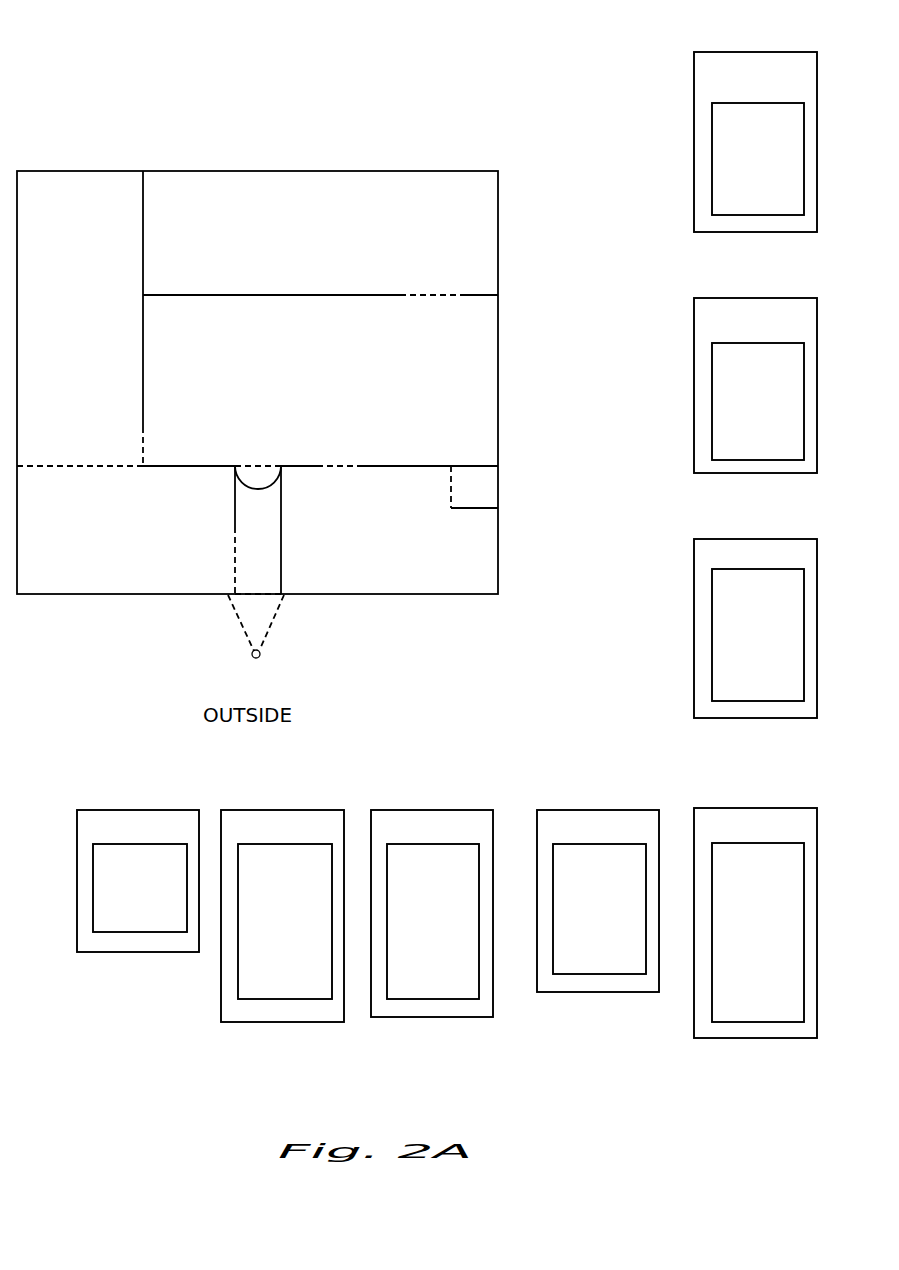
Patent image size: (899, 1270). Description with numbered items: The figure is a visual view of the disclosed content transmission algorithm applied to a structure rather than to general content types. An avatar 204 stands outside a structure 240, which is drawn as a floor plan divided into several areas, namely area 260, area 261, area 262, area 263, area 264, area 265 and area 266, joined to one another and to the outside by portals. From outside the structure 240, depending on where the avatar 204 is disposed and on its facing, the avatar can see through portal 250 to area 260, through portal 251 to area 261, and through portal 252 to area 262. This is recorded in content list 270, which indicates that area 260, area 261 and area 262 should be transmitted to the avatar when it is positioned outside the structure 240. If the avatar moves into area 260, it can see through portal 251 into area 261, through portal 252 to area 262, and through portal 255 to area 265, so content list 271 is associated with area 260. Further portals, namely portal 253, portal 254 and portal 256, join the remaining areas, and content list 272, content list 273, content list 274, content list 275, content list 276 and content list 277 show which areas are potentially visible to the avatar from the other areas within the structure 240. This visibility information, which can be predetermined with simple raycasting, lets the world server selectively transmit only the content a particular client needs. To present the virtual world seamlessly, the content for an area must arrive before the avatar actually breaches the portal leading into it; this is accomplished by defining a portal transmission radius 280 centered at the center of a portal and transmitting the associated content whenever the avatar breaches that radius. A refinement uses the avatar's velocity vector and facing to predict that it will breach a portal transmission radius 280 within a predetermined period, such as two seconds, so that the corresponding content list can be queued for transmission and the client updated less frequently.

The avatar 204 is at (259, 658).
The structure 240 is at (442, 596).
The portal 250 is at (262, 608).
The portal 251 is at (230, 537).
The portal 252 is at (268, 472).
The portal 253 is at (328, 468).
The portal 254 is at (148, 452).
The portal 255 is at (433, 298).
The portal 256 is at (95, 470).
The area 260 is at (276, 580).
The area 261 is at (130, 553).
The area 262 is at (319, 381).
The area 263 is at (395, 543).
The area 264 is at (95, 371).
The area 265 is at (324, 253).
The area 266 is at (488, 500).
The content list 270 is at (813, 43).
The content list 271 is at (813, 293).
The content list 272 is at (813, 528).
The content list 273 is at (813, 804).
The content list 274 is at (653, 804).
The content list 275 is at (488, 804).
The content list 276 is at (341, 804).
The content list 277 is at (196, 804).
The portal transmission radius 280 is at (250, 472).